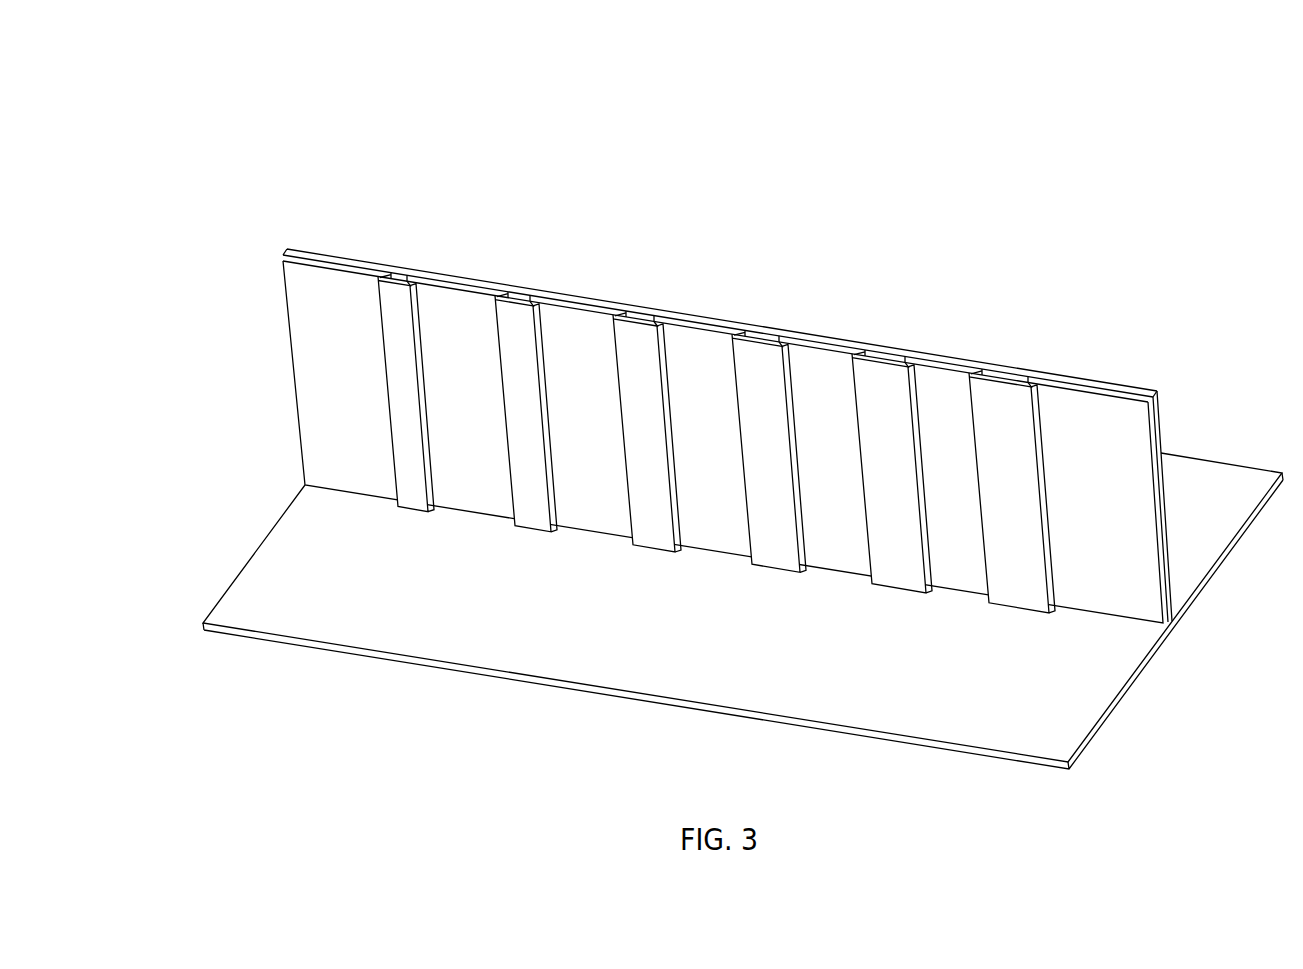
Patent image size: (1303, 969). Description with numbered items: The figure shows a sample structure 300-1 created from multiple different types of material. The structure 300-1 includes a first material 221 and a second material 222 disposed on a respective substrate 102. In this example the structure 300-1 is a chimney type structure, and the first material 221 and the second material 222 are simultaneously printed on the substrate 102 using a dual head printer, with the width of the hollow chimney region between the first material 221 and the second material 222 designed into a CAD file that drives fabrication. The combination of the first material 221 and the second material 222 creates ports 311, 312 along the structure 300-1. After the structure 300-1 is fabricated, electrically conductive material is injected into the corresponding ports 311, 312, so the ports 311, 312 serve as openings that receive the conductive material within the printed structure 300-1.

The structure 300-1 is at (300, 143).
The substrate 102 is at (1097, 696).
The first material 221 is at (1145, 550).
The second material 222 is at (1127, 386).
The port 311 is at (1007, 369).
The port 312 is at (890, 348).